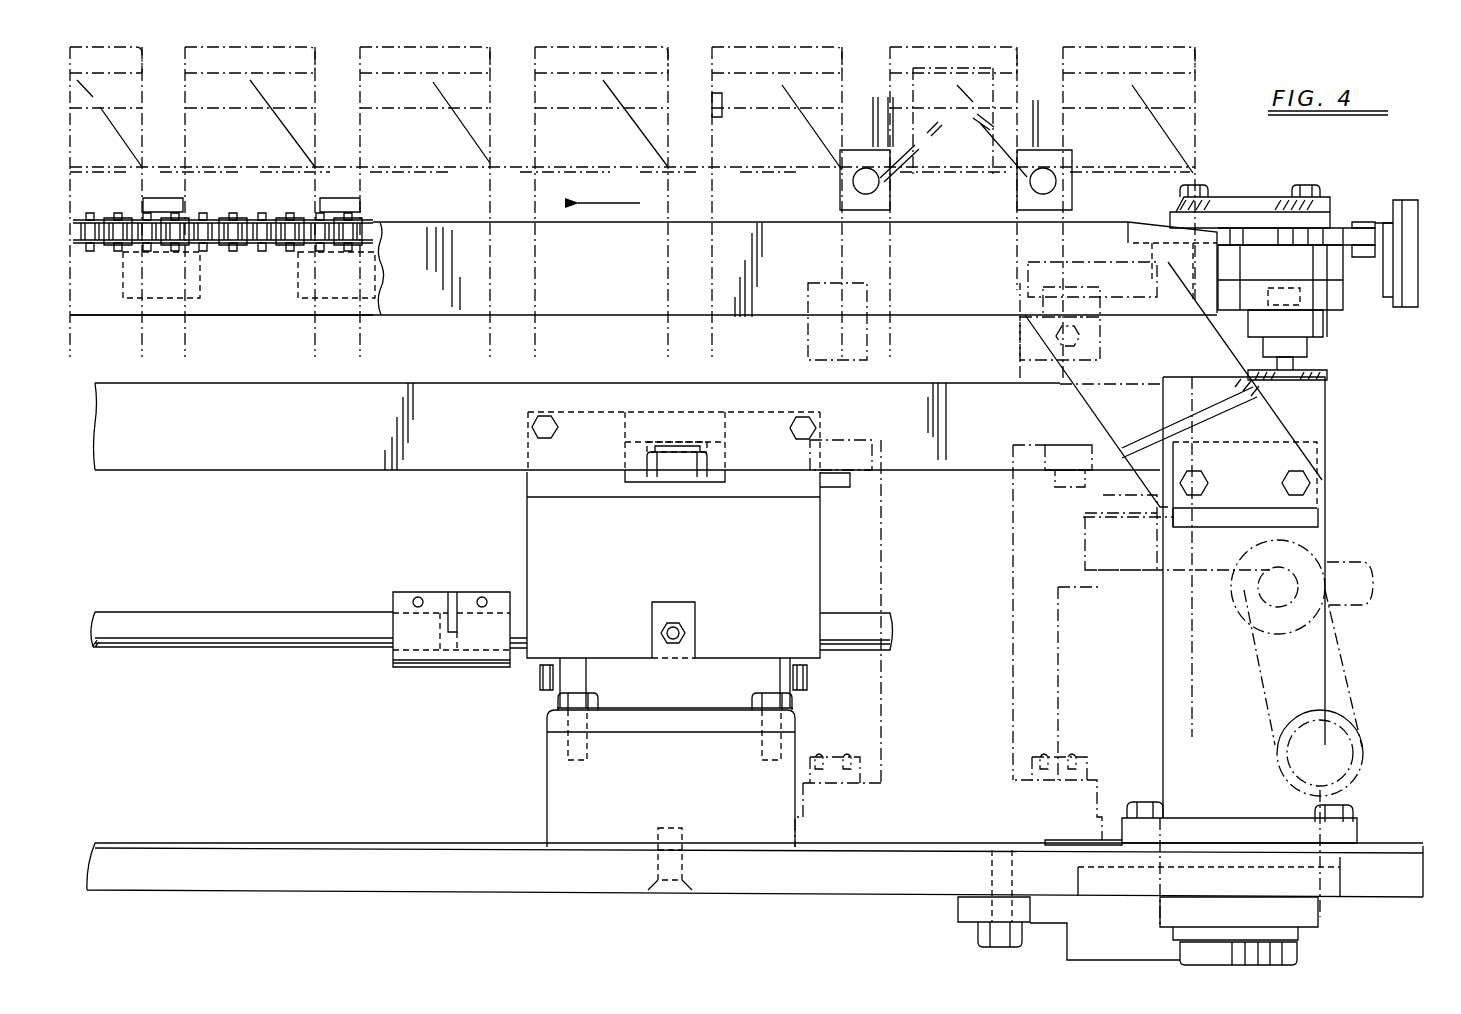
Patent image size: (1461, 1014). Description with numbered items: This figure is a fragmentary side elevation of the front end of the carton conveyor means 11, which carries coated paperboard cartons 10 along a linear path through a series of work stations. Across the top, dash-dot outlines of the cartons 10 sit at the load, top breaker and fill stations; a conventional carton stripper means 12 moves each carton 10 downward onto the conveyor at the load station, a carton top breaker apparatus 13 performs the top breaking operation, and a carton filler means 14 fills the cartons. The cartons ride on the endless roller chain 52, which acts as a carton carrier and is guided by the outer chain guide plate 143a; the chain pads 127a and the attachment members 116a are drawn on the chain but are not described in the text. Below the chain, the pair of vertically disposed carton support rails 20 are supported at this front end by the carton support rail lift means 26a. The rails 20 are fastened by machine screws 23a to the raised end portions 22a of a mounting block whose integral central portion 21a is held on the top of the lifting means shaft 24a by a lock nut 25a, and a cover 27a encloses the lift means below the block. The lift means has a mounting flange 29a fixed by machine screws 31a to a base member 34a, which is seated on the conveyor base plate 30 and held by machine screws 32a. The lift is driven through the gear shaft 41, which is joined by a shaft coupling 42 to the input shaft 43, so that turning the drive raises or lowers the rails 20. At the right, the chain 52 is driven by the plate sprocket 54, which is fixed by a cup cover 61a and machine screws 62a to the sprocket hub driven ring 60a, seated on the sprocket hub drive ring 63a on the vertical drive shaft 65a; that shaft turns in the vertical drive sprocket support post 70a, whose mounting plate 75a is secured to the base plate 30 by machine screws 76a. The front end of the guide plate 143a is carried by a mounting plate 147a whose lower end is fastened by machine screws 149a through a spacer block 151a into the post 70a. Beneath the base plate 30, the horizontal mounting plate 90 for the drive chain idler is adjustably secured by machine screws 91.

The carton 10 is at (126, 80).
The carton filler means 14 is at (693, 172).
The outer chain guide plate 143a is at (576, 313).
The endless roller chain 52 is at (280, 251).
The chain pad / bracket 127a is at (176, 210).
The attachment member 116a is at (302, 293).
The carton support rails 20 is at (340, 460).
The raised end portions 22a is at (742, 427).
The machine screws 23a is at (530, 432).
The lifting means shaft 24a is at (633, 445).
The lock nut 25a is at (673, 463).
The central portion 21a is at (715, 487).
The cover 27a is at (543, 543).
The carton top breaker apparatus 13 is at (880, 537).
The carton stripper means 12 is at (1072, 578).
The gear shaft 41 is at (360, 640).
The shaft coupling 42 is at (458, 668).
The input shaft 43 is at (517, 628).
The carton support rail lift means 26a is at (583, 678).
The mounting plate or flange 29a is at (622, 722).
The base member 34a is at (563, 823).
The machine screws 31a is at (752, 702).
The machine screws 32a is at (685, 868).
The conveyor base plate 30 is at (588, 883).
The carton conveyor means 11 is at (1330, 397).
The mounting plate 147a is at (1268, 425).
The machine screws 149a is at (1293, 482).
The spacer block 151a is at (1307, 520).
The vertical drive sprocket support post 70a is at (1315, 541).
The machine screws 76a is at (1165, 810).
The mounting plate 75a is at (1355, 836).
The horizontal mounting plate 90 is at (1077, 943).
The machine screws 91 is at (978, 938).
The sprocket hub driven ring 60a is at (1297, 273).
The cup cover 61a is at (1293, 212).
The machine screws 62a is at (1193, 187).
The plate sprocket 54 is at (1317, 233).
The sprocket hub drive ring 63a is at (1328, 302).
The vertical drive shaft 65a is at (1295, 366).